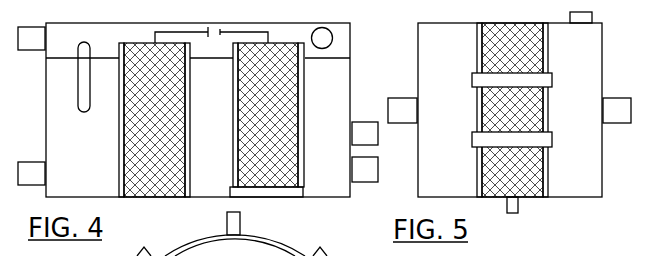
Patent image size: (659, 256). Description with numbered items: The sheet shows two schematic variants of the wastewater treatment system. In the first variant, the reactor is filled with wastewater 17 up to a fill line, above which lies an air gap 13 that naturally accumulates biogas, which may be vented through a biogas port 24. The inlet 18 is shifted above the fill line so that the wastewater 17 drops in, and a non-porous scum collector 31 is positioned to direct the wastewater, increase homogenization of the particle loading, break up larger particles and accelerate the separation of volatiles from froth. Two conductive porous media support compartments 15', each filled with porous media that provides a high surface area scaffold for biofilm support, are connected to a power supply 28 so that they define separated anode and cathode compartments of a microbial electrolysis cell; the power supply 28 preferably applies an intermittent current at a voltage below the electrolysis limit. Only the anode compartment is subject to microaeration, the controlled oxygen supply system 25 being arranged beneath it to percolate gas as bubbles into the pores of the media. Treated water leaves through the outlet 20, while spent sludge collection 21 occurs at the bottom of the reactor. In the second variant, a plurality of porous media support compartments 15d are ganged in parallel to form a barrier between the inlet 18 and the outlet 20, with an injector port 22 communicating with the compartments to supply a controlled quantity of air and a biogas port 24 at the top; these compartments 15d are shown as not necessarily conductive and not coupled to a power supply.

In FIG. 4, the air gap 13 is at (121, 44).
In FIG. 4, the conductive porous media support compartment 15' is at (211, 120).
In FIG. 5, the porous media support compartment 15d is at (528, 64).
In FIG. 4, the wastewater 17 is at (95, 155).
In FIG. 4, the inlet 18 is at (43, 47).
In FIG. 5, the inlet 18 is at (414, 120).
In FIG. 4, the outlet 20 is at (377, 143).
In FIG. 5, the outlet 20 is at (629, 120).
In FIG. 4, the spent sludge collection 21 is at (43, 183).
In FIG. 5, the injector port 22 is at (518, 205).
In FIG. 4, the biogas port 24 is at (325, 48).
In FIG. 5, the biogas port 24 is at (582, 23).
In FIG. 4, the controlled oxygen supply system 25 is at (302, 192).
In FIG. 4, the power supply 28 is at (214, 27).
In FIG. 4, the non-porous scum collector 31 is at (84, 70).